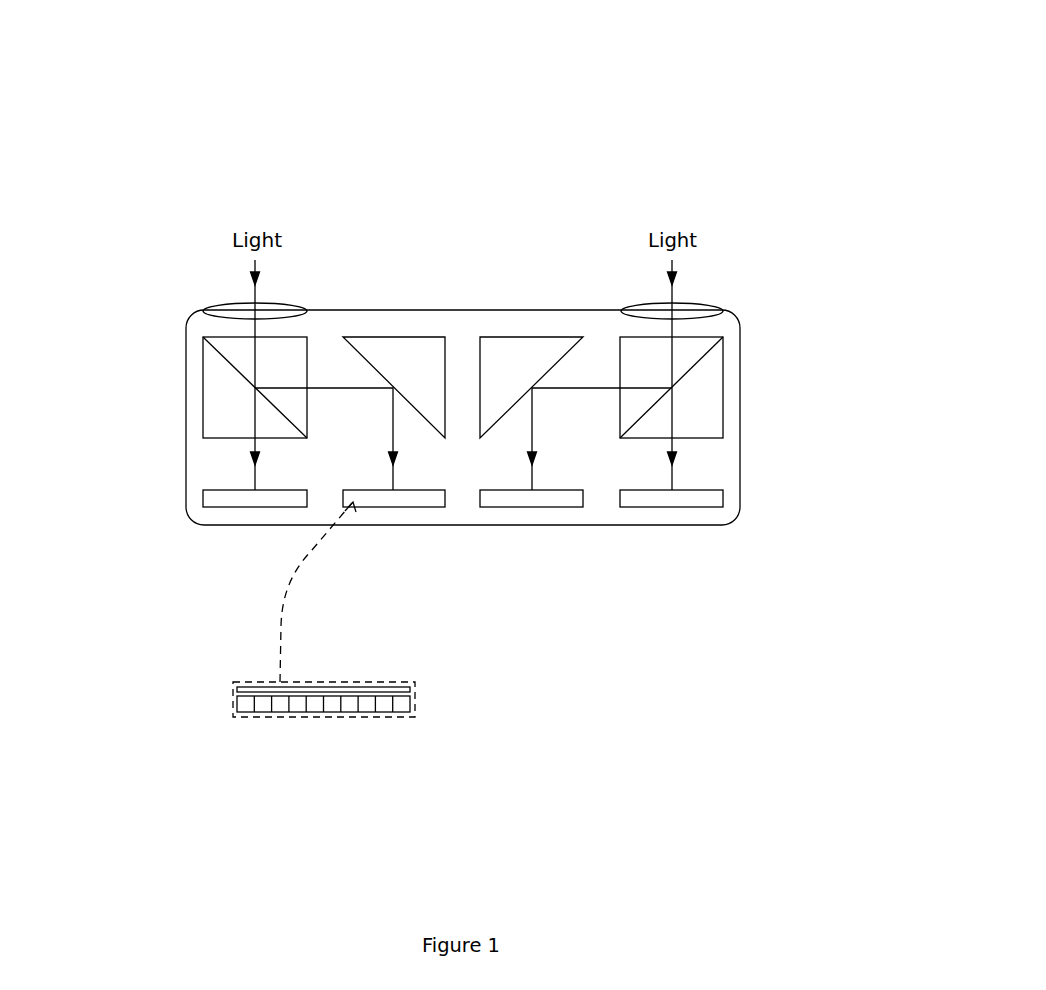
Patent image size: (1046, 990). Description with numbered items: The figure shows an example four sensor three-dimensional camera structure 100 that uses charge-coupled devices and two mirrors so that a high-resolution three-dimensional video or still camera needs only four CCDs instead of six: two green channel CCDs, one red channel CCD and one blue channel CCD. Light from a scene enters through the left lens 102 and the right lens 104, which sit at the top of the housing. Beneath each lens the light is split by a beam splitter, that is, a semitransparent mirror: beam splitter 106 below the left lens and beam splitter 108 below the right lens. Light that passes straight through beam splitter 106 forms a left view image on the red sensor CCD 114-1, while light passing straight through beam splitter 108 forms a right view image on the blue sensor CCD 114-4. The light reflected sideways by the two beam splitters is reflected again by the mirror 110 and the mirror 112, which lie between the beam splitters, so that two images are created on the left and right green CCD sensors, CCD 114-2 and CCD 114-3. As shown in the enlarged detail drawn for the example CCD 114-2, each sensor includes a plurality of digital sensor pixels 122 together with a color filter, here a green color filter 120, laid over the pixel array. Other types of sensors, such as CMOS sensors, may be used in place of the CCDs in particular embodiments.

The four sensor three-dimensional camera structure 100 is at (173, 60).
The left lens 102 is at (297, 305).
The right lens 104 is at (622, 306).
The beam splitter 106 is at (220, 397).
The beam splitter 108 is at (697, 407).
The mirror 110 is at (435, 365).
The mirror 112 is at (529, 365).
The red sensor CCD 114-1 is at (263, 498).
The left green CCD sensor 114-2 is at (413, 498).
The right green CCD sensor 114-3 is at (512, 500).
The blue sensor CCD 114-4 is at (658, 502).
The green color filter 120 is at (408, 690).
The pixels 122 is at (368, 705).